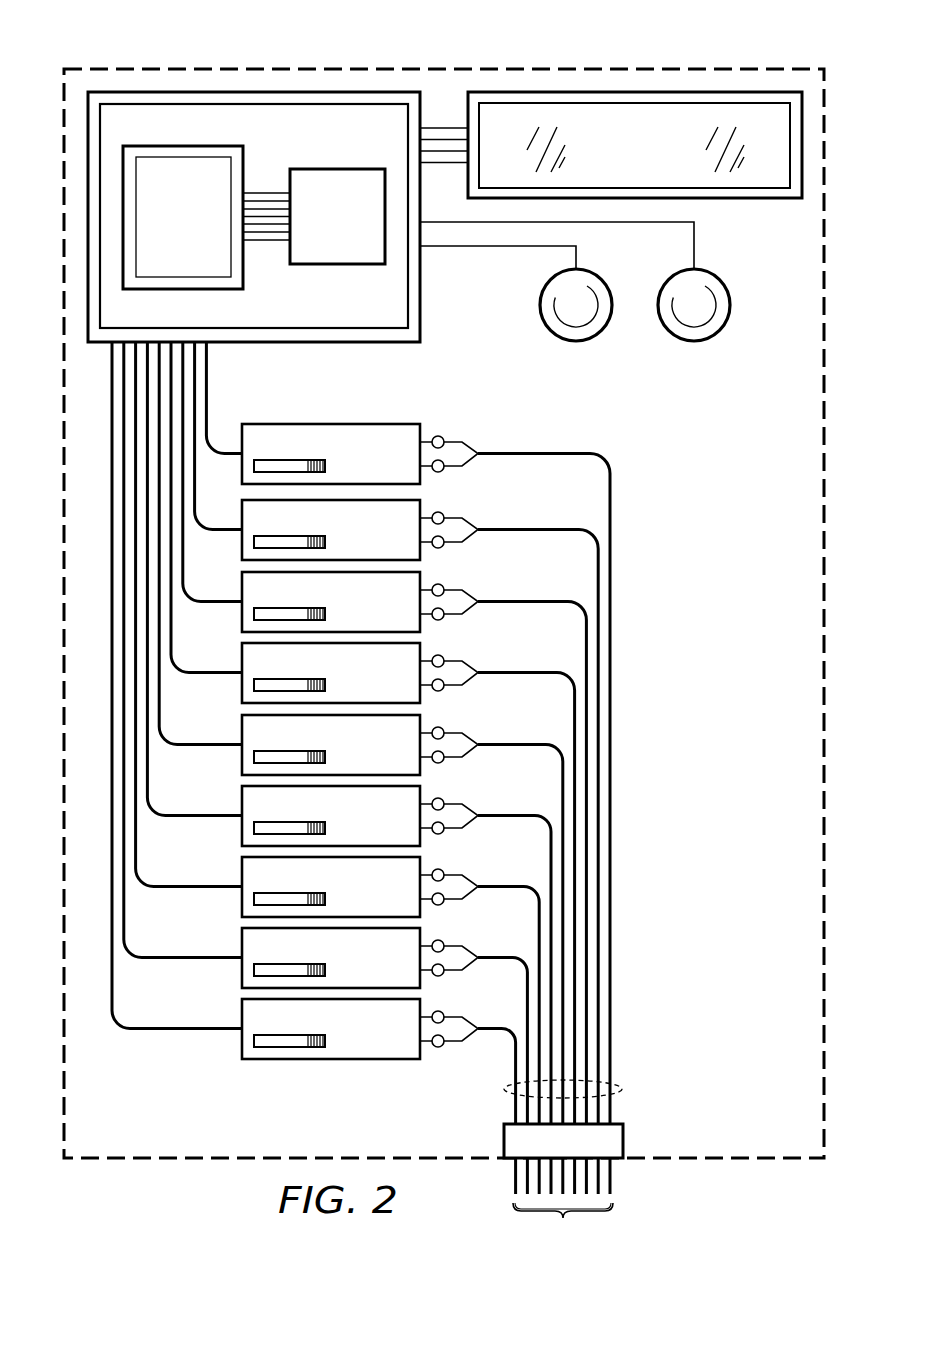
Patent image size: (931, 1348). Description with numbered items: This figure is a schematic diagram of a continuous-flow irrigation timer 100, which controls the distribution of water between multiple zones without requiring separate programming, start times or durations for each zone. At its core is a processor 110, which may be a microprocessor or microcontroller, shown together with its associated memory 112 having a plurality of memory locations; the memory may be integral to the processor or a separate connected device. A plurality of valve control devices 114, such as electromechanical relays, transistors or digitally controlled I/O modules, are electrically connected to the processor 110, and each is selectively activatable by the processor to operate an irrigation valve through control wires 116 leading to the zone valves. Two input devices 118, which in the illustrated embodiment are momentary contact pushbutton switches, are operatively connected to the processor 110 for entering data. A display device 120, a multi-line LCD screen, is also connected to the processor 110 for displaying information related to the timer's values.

The continuous-flow irrigation timer 100 is at (378, 69).
The processor 110 is at (160, 233).
The memory 112 is at (314, 233).
The valve control devices 114 is at (351, 468).
The control wires 116 is at (622, 1089).
The input devices 118 is at (588, 340).
The display device 120 is at (610, 162).